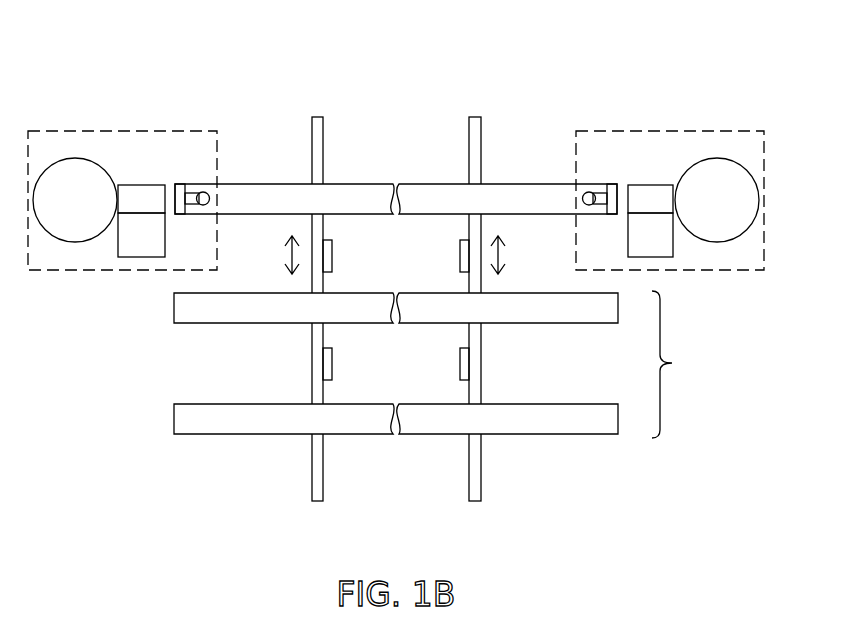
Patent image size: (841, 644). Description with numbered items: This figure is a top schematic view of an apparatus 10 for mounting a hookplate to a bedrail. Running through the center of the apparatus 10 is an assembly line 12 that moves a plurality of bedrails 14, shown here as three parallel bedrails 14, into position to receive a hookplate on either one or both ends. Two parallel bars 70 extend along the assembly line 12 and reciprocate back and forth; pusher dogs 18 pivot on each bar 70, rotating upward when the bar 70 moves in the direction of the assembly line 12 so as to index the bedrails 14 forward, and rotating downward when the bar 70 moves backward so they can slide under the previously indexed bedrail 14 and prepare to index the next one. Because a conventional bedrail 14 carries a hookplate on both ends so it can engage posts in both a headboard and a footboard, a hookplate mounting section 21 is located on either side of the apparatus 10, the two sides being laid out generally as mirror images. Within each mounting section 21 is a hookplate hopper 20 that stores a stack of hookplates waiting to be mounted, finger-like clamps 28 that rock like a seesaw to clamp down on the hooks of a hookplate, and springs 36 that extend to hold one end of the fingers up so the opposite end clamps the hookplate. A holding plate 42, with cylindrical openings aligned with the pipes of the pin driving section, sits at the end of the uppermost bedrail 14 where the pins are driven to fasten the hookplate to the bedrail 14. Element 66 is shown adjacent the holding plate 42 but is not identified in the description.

The apparatus 10 is at (386, 42).
The assembly line 12 is at (677, 364).
The bedrail 14 is at (350, 209).
The pusher dog 18 is at (332, 257).
The hookplate hopper 20 is at (157, 241).
The hookplate mounting section 21 is at (45, 272).
The finger-like clamp 28 is at (147, 186).
The spring 36 is at (75, 158).
The holding plate 42 is at (178, 184).
The pin connector 66 is at (206, 194).
The bar 70 is at (316, 117).